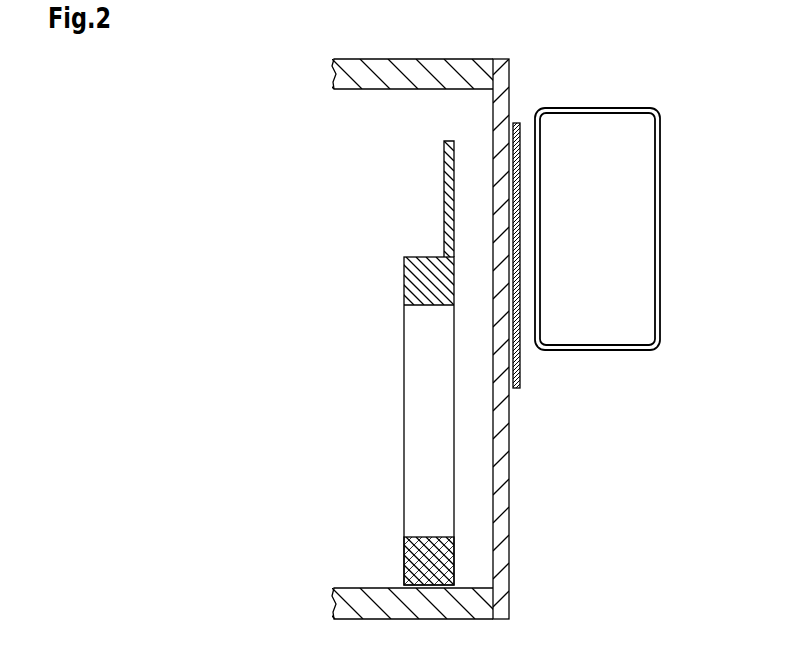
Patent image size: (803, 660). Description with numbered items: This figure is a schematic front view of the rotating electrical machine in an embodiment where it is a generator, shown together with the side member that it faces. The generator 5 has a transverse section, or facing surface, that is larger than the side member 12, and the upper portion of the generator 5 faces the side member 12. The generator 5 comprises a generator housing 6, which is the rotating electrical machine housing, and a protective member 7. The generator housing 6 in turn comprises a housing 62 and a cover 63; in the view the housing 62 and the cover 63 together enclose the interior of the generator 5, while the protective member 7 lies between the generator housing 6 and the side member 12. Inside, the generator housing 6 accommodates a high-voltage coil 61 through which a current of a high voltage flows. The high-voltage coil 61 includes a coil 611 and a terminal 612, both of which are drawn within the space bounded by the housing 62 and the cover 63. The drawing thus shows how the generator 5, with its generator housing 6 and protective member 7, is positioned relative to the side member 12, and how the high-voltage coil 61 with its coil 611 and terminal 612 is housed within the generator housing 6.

The generator 5 is at (582, 28).
The generator housing 6 is at (523, 55).
The protective member 7 is at (518, 136).
The side member 12 is at (624, 108).
The high-voltage coil 61 is at (400, 278).
The housing 62 is at (401, 70).
The cover 63 is at (500, 448).
The coil 611 is at (403, 560).
The terminal 612 is at (444, 185).